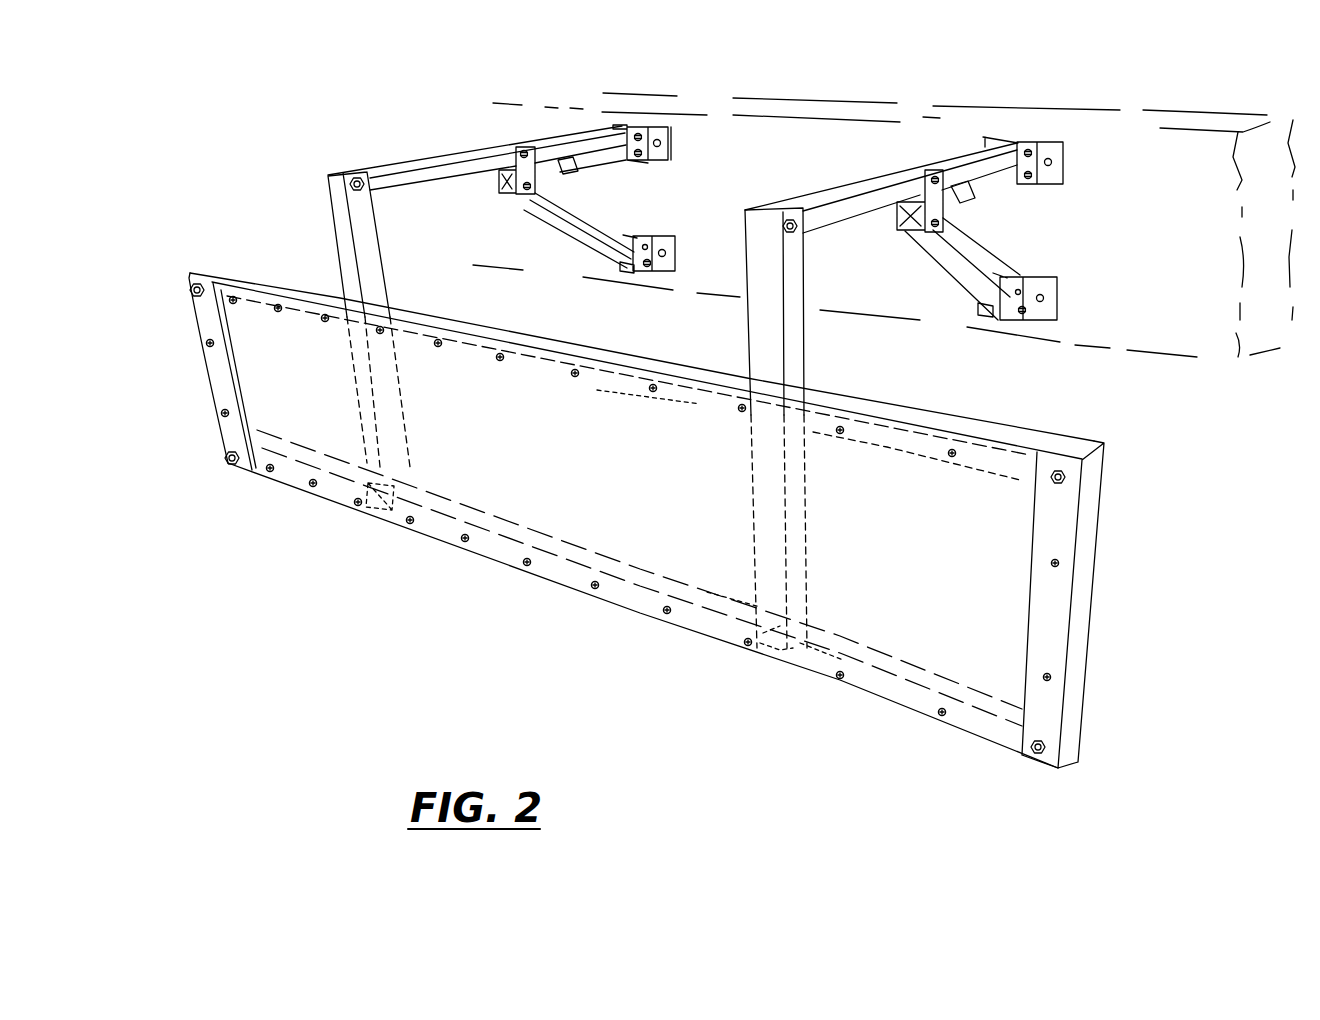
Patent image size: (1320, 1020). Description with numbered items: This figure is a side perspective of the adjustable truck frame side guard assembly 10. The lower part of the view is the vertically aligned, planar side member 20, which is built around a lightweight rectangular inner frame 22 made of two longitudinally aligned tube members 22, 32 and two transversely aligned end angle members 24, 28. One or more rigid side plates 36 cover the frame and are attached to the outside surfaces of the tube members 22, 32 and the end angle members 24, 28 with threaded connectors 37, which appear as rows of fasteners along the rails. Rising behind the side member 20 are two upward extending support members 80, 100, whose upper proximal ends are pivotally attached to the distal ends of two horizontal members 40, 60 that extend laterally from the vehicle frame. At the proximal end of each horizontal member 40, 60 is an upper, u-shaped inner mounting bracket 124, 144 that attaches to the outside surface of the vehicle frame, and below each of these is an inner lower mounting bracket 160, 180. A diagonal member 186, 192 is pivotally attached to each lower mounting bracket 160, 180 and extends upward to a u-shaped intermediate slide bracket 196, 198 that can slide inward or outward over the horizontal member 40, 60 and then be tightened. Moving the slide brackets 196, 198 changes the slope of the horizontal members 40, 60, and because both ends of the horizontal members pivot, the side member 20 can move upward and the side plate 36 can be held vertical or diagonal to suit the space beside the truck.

The side guard assembly 10 is at (258, 214).
The side member 20 is at (255, 476).
The inner frame 22 is at (526, 380).
The end angle member 24 is at (208, 354).
The end angle member 28 is at (1090, 584).
The tube member 32 is at (377, 507).
The side plate 36 is at (560, 460).
The threaded connectors 37 is at (323, 321).
The horizontal member 40 is at (410, 143).
The horizontal member 60 is at (815, 171).
The support member 80 is at (372, 230).
The support member 100 is at (810, 338).
The upper inner mounting bracket 124 is at (663, 122).
The upper inner mounting bracket 144 is at (1063, 143).
The inner lower mounting bracket 160 is at (633, 273).
The inner lower mounting bracket 180 is at (1060, 297).
The diagonal member 186 is at (575, 225).
The diagonal member 192 is at (967, 250).
The intermediate slide bracket 196 is at (525, 202).
The intermediate slide bracket 198 is at (907, 233).